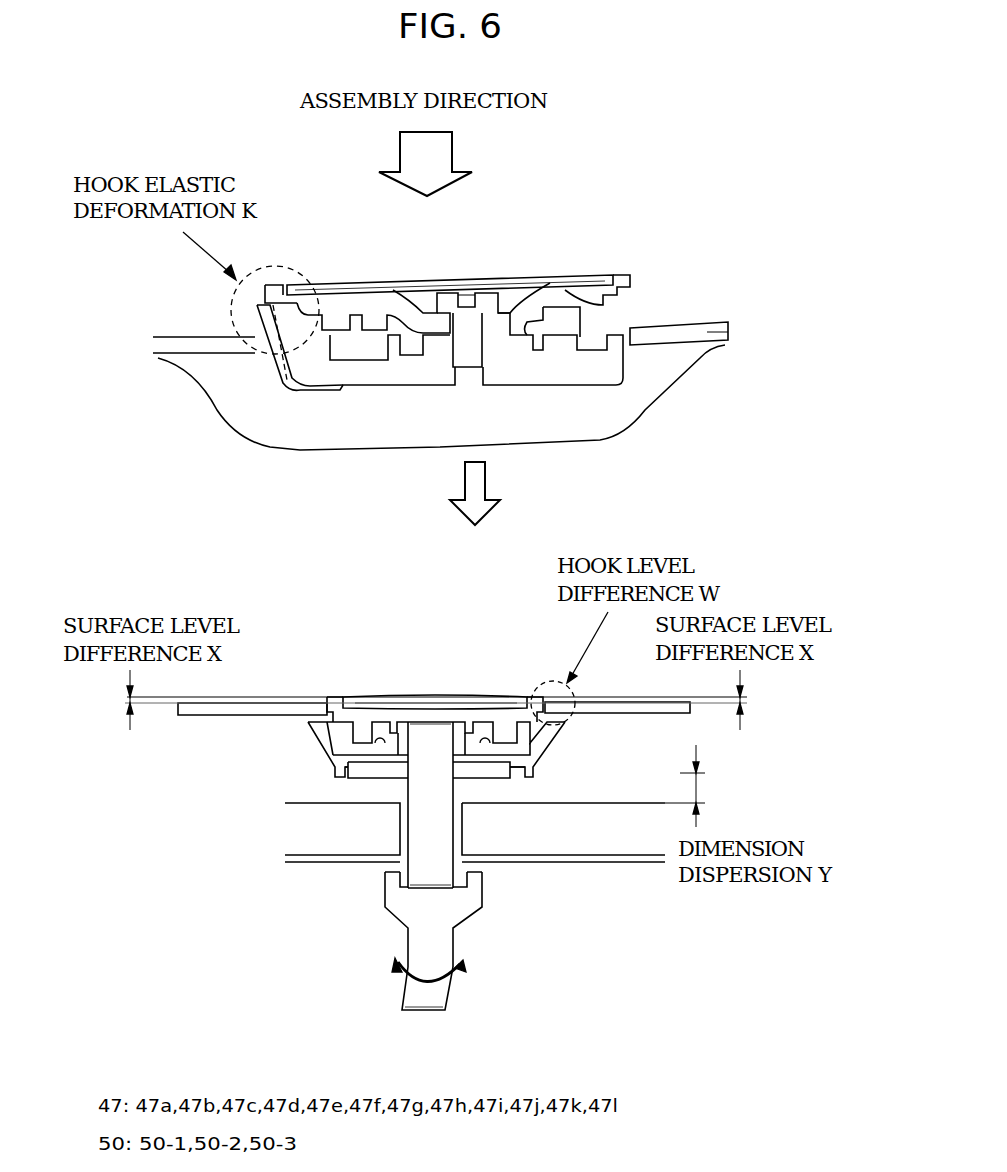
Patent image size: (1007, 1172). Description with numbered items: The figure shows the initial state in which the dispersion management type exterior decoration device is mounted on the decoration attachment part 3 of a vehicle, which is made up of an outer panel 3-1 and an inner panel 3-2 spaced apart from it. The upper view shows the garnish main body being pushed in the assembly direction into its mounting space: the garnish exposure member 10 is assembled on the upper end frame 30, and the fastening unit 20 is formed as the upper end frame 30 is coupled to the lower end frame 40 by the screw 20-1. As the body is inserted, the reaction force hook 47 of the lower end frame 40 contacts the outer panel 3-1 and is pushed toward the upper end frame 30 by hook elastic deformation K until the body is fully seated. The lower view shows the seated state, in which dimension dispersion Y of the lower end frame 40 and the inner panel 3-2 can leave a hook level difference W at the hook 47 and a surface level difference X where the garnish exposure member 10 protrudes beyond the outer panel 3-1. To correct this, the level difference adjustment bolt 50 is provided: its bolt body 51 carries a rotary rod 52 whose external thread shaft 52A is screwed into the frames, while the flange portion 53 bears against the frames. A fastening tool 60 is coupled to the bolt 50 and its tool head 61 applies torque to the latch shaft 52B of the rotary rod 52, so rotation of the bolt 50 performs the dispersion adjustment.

The decoration attachment part 3 is at (802, 420).
The outer panel 3-1 is at (710, 332).
The inner panel 3-2 is at (680, 363).
The garnish exposure member 10 is at (357, 277).
The fastening unit 20 is at (670, 160).
The screw 20-1 is at (468, 313).
The upper end frame 30 is at (565, 292).
The lower end frame 40 is at (570, 367).
The reaction force hook 47 is at (263, 365).
The level difference adjustment bolt 50 is at (473, 810).
The bolt body 51 is at (642, 930).
The rotary rod 52 is at (447, 828).
The external thread shaft 52A is at (423, 738).
The latch shaft 52B is at (417, 882).
The fastener body 53 is at (492, 770).
The fastening tool 60 is at (402, 947).
The tool head 61 is at (403, 913).